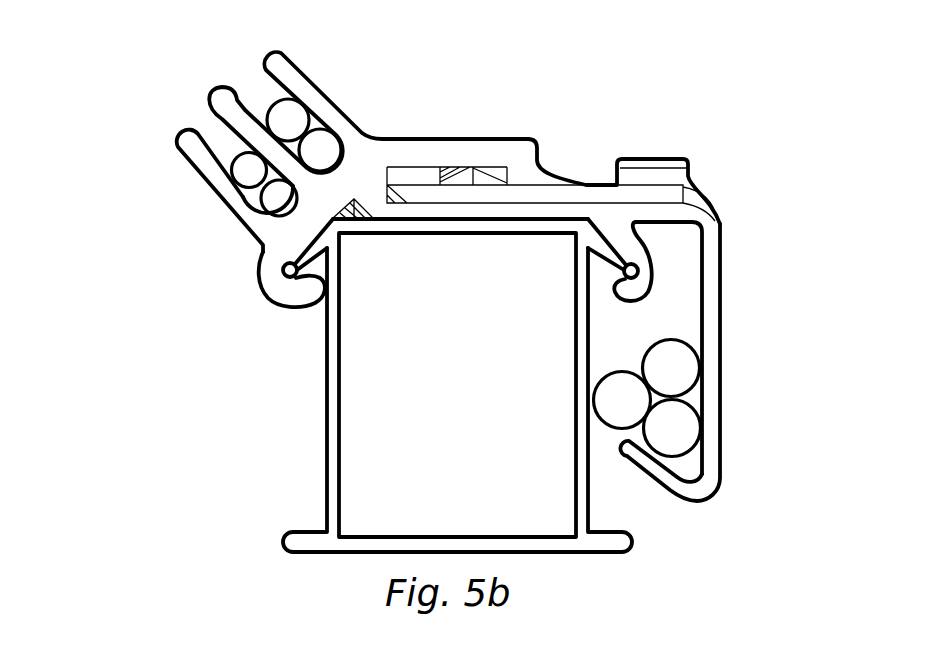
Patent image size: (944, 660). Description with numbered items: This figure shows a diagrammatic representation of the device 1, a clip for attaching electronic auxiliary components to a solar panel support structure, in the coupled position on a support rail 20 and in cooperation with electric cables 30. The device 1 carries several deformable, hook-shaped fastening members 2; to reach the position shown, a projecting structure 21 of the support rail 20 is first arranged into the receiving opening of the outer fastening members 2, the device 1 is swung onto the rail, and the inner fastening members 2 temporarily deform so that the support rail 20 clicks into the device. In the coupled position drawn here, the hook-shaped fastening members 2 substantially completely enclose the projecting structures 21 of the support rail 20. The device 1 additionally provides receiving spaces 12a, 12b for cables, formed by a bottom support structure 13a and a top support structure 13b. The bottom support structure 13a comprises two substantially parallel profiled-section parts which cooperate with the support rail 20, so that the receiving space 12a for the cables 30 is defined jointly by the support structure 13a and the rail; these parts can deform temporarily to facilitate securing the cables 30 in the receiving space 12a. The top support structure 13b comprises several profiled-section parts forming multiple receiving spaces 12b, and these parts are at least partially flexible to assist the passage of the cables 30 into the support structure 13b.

The device 1 is at (742, 168).
The hook-shaped fastening member 2 is at (273, 306).
The receiving space 12a is at (645, 317).
The receiving space 12b is at (253, 82).
The bottom support structure 13a is at (728, 423).
The top support structure 13b is at (175, 151).
The support rail 20 is at (320, 447).
The projecting structure 21 is at (293, 263).
The electric cable 30 is at (251, 172).